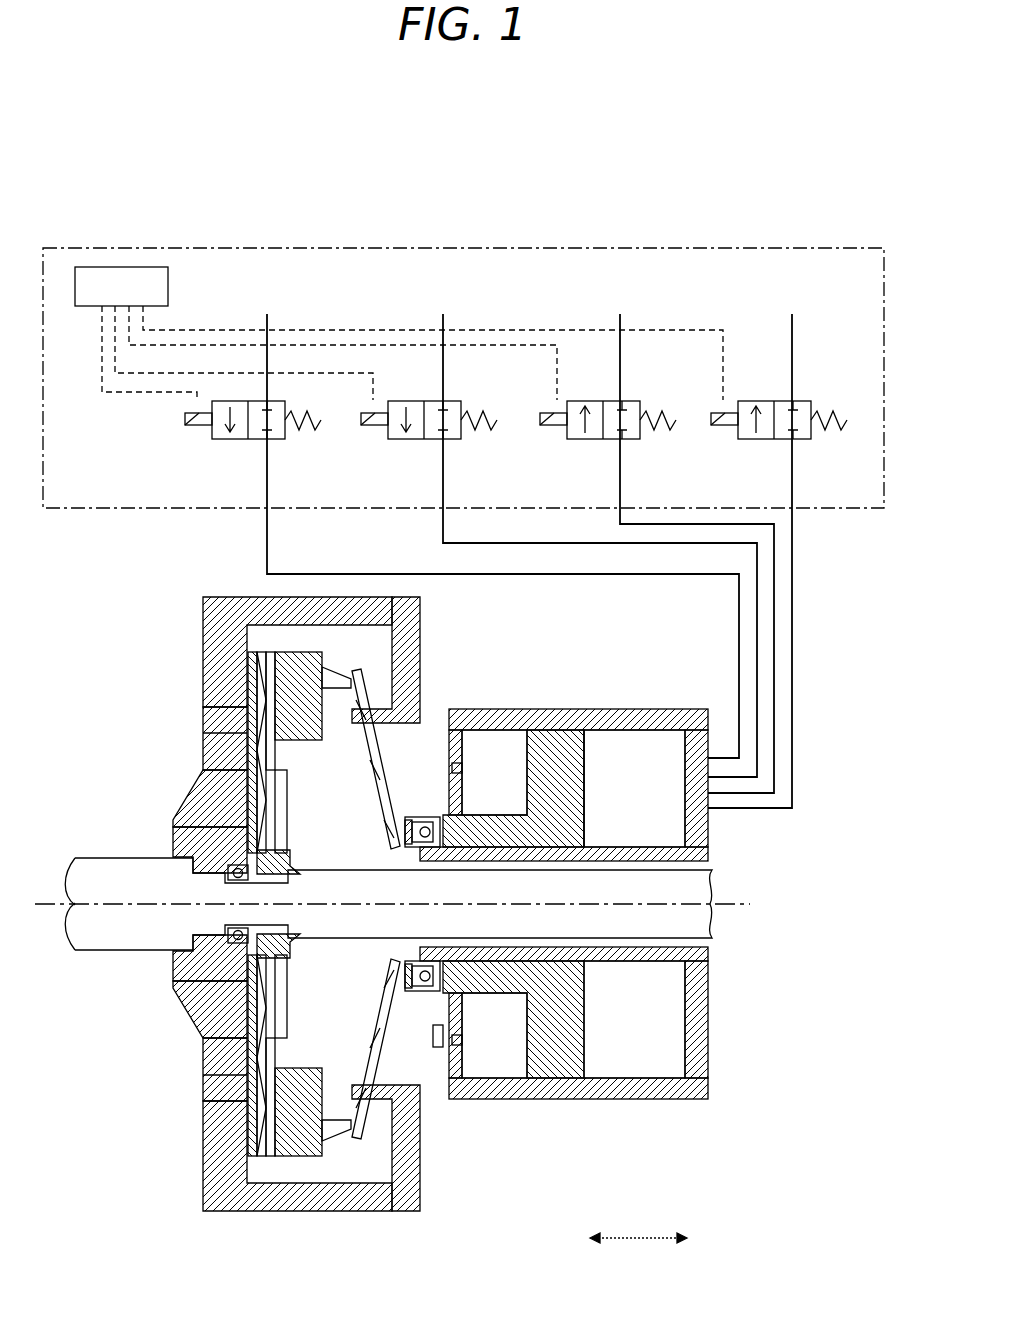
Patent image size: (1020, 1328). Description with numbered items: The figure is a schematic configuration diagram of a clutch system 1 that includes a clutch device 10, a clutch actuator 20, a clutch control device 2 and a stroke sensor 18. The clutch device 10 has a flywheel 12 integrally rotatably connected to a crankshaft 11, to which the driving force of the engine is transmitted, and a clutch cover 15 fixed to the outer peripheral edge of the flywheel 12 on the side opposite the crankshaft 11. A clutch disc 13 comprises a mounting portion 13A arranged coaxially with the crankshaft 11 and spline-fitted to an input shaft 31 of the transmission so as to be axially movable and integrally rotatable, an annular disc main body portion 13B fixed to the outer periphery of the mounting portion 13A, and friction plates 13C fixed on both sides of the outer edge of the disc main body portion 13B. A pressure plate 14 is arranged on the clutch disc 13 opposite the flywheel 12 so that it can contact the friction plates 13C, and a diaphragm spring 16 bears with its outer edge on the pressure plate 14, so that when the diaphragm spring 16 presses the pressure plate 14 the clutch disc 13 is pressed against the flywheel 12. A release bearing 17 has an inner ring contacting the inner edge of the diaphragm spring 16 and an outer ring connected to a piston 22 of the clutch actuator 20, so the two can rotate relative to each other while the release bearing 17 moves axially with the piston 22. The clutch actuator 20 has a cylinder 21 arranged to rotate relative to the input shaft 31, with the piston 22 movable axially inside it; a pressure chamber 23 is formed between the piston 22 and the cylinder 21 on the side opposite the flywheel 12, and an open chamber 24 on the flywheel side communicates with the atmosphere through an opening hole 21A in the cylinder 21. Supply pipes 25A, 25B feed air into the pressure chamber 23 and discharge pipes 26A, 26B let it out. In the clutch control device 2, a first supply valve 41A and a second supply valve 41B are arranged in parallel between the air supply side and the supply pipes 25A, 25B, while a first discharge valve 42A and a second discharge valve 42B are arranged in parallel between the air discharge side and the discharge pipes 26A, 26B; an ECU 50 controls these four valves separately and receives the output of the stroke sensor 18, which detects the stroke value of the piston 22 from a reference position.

The clutch system 1 is at (578, 226).
The clutch control device 2 is at (885, 285).
The clutch device 10 is at (128, 630).
The crankshaft 11 is at (124, 940).
The flywheel 12 is at (215, 683).
The clutch disc 13 is at (93, 705).
The mounting portion 13A is at (172, 826).
The disc main body portion 13B is at (203, 771).
The friction plates 13C is at (203, 708).
The pressure plate 14 is at (297, 741).
The clutch cover 15 is at (421, 640).
The diaphragm spring 16 is at (383, 790).
The release bearing 17 is at (432, 816).
The stroke sensor 18 is at (438, 1048).
The clutch actuator 20 is at (633, 670).
The cylinder 21 is at (678, 709).
The opening hole 21A is at (462, 768).
The piston 22 is at (587, 823).
The pressure chamber 23 is at (645, 794).
The open chamber 24 is at (507, 748).
The supply pipe 25A is at (265, 555).
The supply pipe 25B is at (441, 545).
The discharge pipe 26A is at (619, 530).
The discharge pipe 26B is at (795, 762).
The input shaft 31 is at (712, 913).
The first supply valve 41A is at (212, 440).
The second supply valve 41B is at (388, 440).
The first discharge valve 42A is at (567, 440).
The second discharge valve 42B is at (738, 440).
The ECU 50 is at (125, 266).